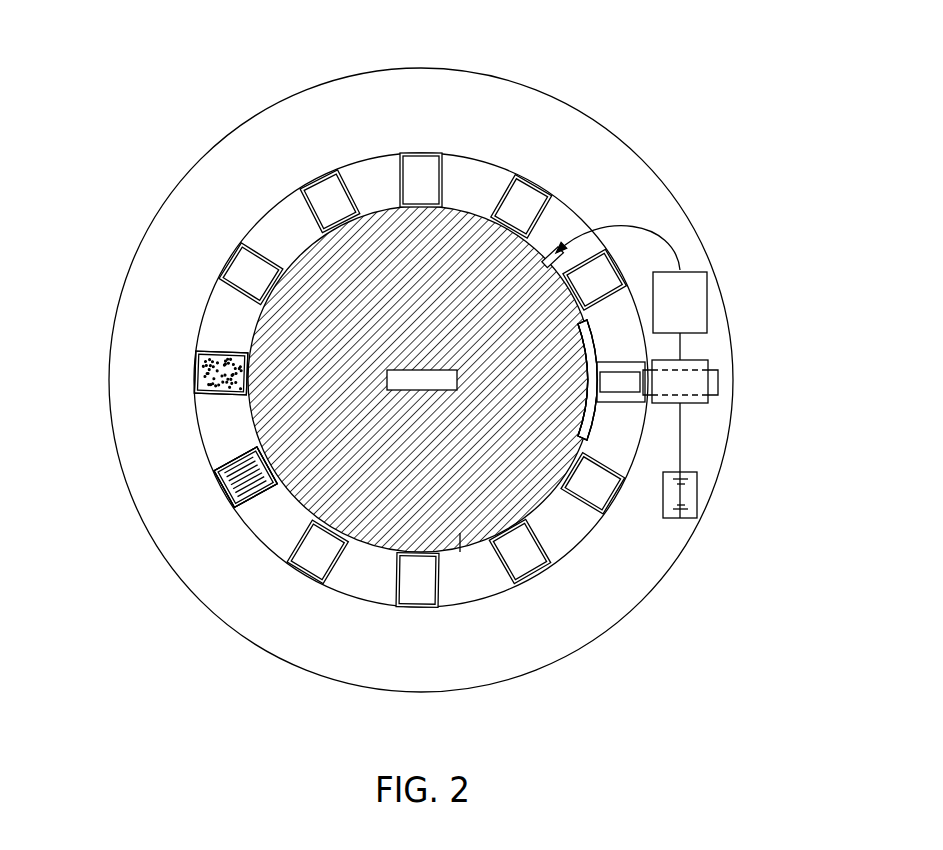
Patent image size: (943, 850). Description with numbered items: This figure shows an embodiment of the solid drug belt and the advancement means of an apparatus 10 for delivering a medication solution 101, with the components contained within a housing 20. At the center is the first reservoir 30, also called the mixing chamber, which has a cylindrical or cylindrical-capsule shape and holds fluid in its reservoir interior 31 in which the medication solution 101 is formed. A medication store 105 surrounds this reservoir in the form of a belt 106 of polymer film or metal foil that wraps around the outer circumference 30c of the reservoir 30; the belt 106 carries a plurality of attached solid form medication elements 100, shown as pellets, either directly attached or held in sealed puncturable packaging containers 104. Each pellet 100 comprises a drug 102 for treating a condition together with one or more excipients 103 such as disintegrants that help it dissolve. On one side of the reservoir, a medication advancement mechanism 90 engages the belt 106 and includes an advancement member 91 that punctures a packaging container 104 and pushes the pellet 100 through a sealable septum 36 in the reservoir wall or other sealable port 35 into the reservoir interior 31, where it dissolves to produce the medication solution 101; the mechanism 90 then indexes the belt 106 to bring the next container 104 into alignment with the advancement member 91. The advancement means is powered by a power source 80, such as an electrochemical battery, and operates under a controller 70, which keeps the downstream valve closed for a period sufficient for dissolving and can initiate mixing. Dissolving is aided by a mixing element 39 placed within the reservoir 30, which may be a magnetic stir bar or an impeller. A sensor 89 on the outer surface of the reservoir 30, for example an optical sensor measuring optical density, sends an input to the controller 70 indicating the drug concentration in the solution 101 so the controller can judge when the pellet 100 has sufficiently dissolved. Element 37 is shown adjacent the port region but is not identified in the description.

The apparatus 10 is at (216, 70).
The housing 20 is at (628, 148).
The first reservoir 30 is at (543, 505).
The outer circumference 30c is at (362, 540).
The reservoir interior 31 is at (460, 540).
The sealable port 35 is at (588, 353).
The sealable septum 36 is at (587, 380).
The chamber wall 37 is at (593, 382).
The mixing element 39 is at (431, 392).
The controller 70 is at (700, 297).
The power source 80 is at (693, 488).
The sensor 89 is at (552, 258).
The medication advancement mechanism 90 is at (718, 382).
The advancement member 91 is at (703, 390).
The solid form medication element 100 is at (197, 380).
The medication solution 101 is at (432, 261).
The drug 102 is at (245, 477).
The excipient 103 is at (245, 477).
The packaging container 104 is at (195, 362).
The medication store 105 is at (243, 270).
The belt 106 is at (218, 437).